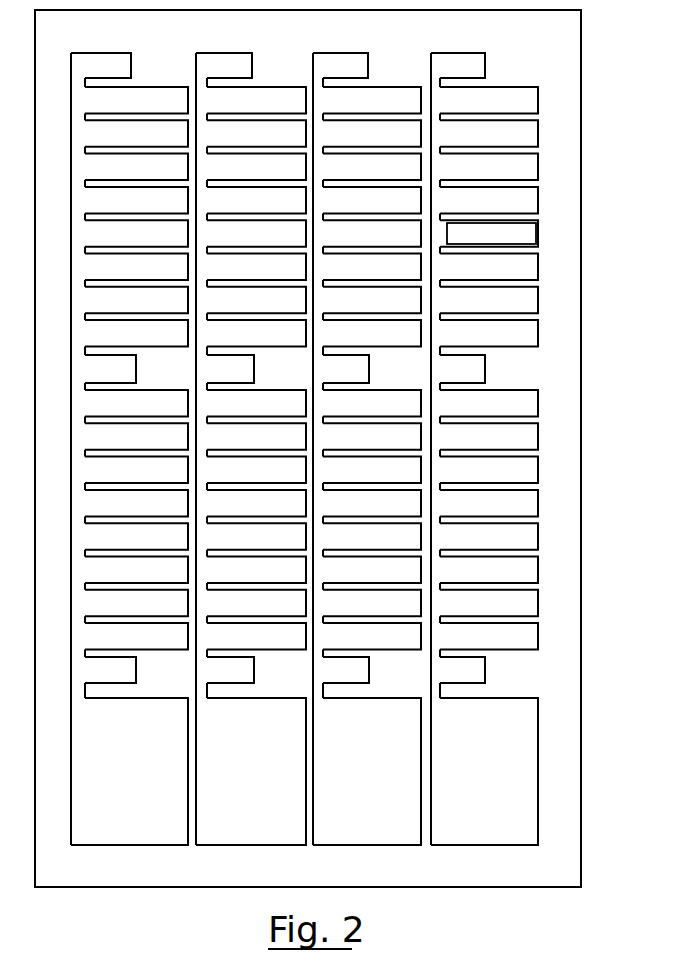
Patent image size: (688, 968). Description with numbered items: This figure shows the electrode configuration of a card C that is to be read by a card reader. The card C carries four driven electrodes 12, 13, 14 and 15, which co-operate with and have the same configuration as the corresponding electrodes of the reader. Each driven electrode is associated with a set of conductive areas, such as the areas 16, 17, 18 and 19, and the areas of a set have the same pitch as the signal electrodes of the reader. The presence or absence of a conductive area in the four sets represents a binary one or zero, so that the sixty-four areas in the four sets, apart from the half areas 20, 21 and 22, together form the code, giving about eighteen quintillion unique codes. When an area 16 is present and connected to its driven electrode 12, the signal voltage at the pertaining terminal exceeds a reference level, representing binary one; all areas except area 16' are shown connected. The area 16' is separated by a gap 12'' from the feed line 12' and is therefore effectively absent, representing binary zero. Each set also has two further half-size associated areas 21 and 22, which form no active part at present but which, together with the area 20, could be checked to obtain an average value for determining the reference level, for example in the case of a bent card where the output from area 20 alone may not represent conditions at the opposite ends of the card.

The driven electrode 12 is at (484, 480).
The driven electrode 13 is at (375, 832).
The driven electrode 14 is at (263, 832).
The driven electrode 15 is at (138, 832).
The conductive area 16 is at (448, 431).
The conductive area 17 is at (370, 165).
The conductive area 18 is at (258, 197).
The conductive area 19 is at (137, 197).
The half area 20 is at (483, 372).
The half-size associated area 21 is at (478, 63).
The half-size associated area 22 is at (483, 668).
The feed line 12' is at (530, 194).
The gap 12'' is at (536, 259).
The conductive area 16' is at (537, 232).
The card C is at (588, 665).